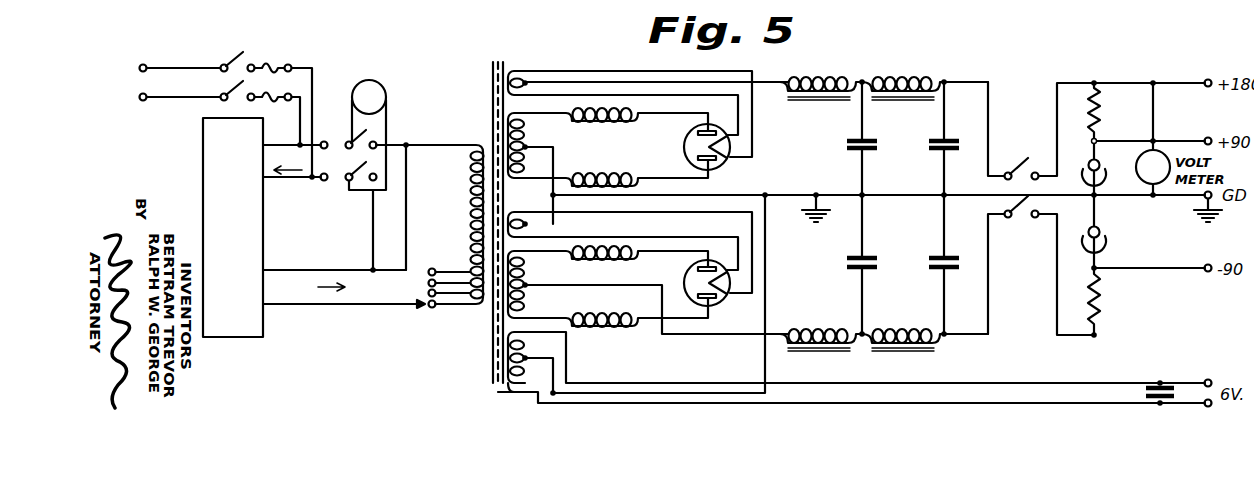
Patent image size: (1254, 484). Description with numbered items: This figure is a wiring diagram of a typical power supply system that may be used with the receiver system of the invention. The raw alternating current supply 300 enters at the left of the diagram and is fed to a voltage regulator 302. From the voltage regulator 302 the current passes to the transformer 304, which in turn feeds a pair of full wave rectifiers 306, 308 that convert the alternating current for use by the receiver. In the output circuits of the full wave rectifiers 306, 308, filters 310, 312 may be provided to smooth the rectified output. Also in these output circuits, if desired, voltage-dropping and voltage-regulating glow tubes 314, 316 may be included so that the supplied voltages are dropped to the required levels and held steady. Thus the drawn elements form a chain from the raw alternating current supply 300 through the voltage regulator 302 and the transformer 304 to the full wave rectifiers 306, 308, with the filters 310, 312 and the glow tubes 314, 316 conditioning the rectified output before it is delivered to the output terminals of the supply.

The raw alternating current supply 300 is at (142, 78).
The voltage regulator 302 is at (233, 338).
The transformer 304 is at (468, 165).
The full wave rectifier 306 is at (722, 167).
The full wave rectifier 308 is at (722, 303).
The filter 310 is at (806, 69).
The filter 312 is at (806, 354).
The voltage-dropping and voltage-regulating glow tube 314 is at (1104, 172).
The voltage-dropping and voltage-regulating glow tube 316 is at (1104, 240).